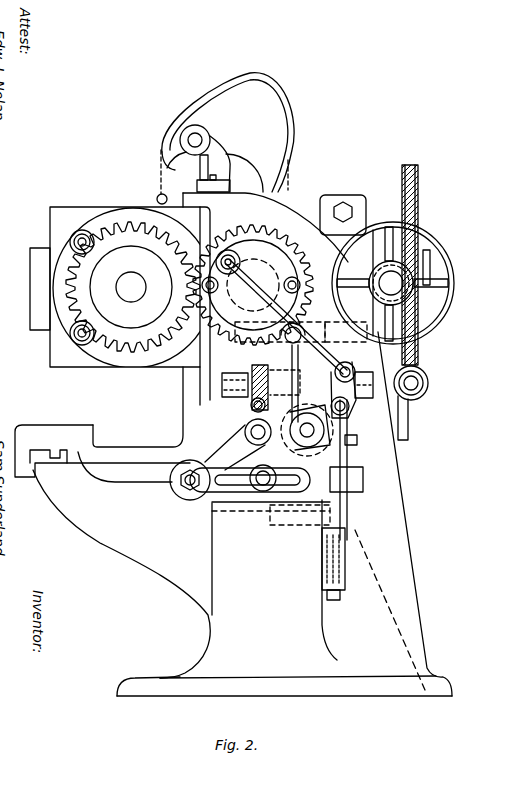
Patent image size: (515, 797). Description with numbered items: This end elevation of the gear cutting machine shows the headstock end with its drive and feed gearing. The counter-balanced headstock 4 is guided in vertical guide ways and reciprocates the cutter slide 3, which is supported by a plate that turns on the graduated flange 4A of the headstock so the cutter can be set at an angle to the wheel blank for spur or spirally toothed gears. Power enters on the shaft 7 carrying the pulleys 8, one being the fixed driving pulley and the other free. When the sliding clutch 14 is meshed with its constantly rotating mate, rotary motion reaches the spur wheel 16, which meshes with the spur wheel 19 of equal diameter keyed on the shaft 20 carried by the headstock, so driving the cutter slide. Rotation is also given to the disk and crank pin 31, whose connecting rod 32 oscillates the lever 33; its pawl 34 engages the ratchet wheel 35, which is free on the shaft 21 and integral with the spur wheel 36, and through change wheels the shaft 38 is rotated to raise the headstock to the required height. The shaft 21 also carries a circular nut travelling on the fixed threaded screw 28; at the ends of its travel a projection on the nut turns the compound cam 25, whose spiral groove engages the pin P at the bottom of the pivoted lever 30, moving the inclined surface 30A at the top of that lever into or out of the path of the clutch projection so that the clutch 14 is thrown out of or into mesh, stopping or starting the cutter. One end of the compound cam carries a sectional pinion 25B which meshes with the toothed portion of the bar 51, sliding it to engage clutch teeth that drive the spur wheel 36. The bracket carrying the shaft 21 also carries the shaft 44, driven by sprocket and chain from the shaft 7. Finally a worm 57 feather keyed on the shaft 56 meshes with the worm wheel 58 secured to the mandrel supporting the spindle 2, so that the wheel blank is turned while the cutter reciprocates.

The spindle 2 is at (426, 265).
The cutter slide 3 is at (34, 297).
The counter-balanced headstock 4 is at (78, 213).
The graduated flange 4A is at (98, 223).
The shaft 7 is at (403, 290).
The pulleys 8 is at (449, 292).
The sliding clutch 14 is at (202, 325).
The spur wheel 16 is at (288, 238).
The spur wheel 19 is at (162, 242).
The shaft 20 is at (129, 280).
The shaft 21 is at (330, 430).
The compound cam 25 is at (285, 386).
The sectional pinion 25B is at (261, 379).
The fixed threaded screw 28 is at (250, 404).
The pivoted lever 30 is at (292, 345).
The inclined surface 30A is at (230, 372).
The disk and crank pin 31 is at (232, 250).
The connecting rod 32 is at (305, 340).
The lever 33 is at (350, 368).
The pawl 34 is at (349, 408).
The ratchet wheel 35 is at (350, 458).
The spur wheel 36 is at (300, 505).
The shaft 38 is at (176, 488).
The shaft 44 is at (258, 445).
The bar 51 is at (245, 430).
The shaft 56 is at (425, 389).
The worm 57 is at (422, 375).
The worm wheel 58 is at (402, 186).
The pin P is at (306, 380).